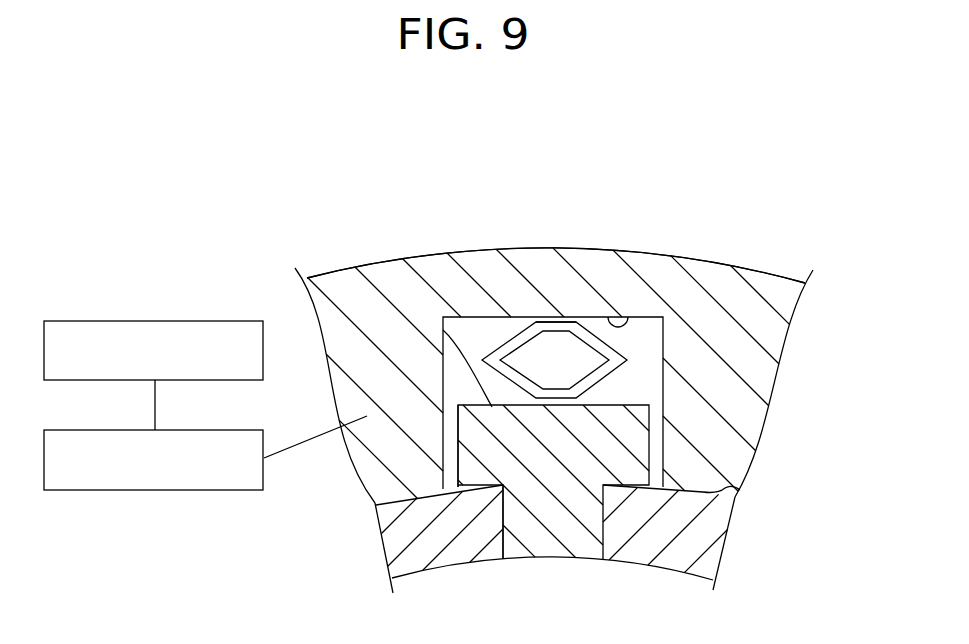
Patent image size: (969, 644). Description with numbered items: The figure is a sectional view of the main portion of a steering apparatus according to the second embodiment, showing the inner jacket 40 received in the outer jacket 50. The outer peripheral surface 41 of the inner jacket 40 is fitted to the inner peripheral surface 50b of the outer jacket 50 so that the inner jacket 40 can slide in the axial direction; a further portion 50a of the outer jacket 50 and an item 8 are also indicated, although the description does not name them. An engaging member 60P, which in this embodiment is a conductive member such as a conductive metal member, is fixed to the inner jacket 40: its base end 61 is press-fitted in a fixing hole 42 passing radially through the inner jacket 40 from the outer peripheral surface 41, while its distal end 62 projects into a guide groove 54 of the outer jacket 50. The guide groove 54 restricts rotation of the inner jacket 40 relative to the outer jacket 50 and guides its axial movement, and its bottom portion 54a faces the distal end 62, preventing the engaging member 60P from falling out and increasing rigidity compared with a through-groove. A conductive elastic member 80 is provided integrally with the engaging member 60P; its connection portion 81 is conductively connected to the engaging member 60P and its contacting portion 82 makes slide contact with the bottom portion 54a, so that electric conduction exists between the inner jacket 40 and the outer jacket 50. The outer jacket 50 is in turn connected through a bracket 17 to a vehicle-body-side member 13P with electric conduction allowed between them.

The vehicle component assembly 8 is at (797, 263).
The vehicle-body-side member 13P is at (155, 320).
The bracket 17 is at (154, 490).
The inner jacket 40 is at (707, 548).
The outer peripheral surface 41 is at (740, 490).
The fixing hole 42 is at (503, 508).
The outer jacket 50 is at (750, 267).
The outer surface of upper member 50a is at (651, 249).
The inner peripheral surface 50b is at (432, 490).
The guide groove 54 is at (640, 383).
The bottom portion 54a is at (615, 312).
The engaging member 60P is at (456, 442).
The base end 61 is at (570, 530).
The distal end 62 is at (443, 330).
The conductive elastic member 80 is at (501, 341).
The connection portion 81 is at (548, 397).
The contacting portion 82 is at (548, 318).